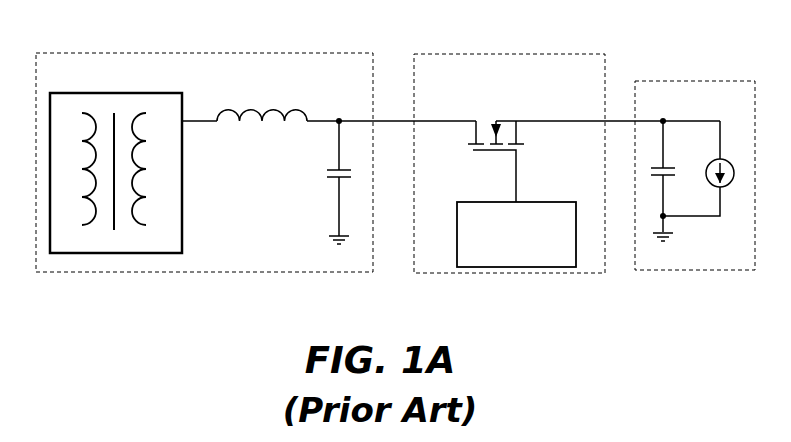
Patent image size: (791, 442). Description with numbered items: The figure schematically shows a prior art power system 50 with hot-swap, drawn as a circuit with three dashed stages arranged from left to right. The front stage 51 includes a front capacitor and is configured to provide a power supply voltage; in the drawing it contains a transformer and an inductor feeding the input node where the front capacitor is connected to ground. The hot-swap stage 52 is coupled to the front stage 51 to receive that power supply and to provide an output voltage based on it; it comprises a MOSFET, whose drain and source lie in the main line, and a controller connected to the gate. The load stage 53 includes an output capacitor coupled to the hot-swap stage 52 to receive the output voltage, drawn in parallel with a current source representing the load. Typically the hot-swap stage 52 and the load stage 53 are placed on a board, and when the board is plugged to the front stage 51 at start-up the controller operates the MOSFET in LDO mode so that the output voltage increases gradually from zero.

The power system 50 is at (68, 43).
The front stage 51 is at (204, 162).
The hot-swap stage 52 is at (509, 163).
The load stage 53 is at (695, 175).